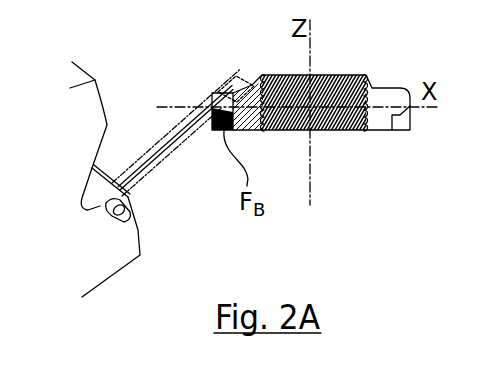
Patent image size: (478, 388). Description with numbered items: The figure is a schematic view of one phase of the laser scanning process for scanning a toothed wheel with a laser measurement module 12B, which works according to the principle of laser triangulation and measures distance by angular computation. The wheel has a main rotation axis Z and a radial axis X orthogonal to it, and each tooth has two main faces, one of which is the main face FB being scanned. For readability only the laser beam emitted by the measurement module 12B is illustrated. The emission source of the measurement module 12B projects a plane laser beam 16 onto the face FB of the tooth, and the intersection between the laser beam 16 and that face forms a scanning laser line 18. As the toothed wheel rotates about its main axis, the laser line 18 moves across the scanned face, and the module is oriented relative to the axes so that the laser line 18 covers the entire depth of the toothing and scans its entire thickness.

The laser measurement module 12B is at (140, 256).
The plane laser beam 16 is at (157, 146).
The scanning laser line 18 is at (206, 100).